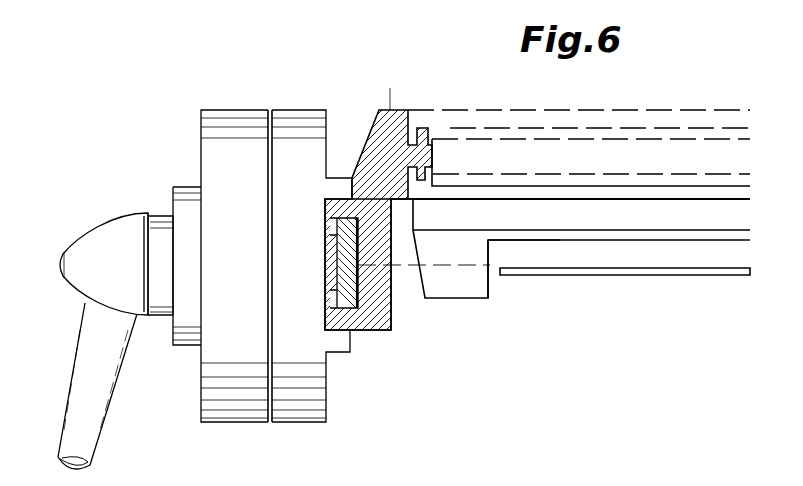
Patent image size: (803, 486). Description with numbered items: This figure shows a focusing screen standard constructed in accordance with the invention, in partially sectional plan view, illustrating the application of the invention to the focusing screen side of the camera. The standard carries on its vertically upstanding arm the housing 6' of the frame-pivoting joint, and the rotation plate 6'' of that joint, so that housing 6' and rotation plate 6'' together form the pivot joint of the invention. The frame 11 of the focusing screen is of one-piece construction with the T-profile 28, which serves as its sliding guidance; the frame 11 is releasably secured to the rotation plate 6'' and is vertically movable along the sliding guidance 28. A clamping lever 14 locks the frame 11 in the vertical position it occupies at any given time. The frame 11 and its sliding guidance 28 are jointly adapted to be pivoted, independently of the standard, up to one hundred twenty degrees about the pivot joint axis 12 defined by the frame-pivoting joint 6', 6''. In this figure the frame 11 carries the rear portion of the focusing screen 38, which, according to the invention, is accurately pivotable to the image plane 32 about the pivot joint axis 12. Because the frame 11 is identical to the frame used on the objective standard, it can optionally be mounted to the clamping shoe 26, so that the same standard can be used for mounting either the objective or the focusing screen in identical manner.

The clamping lever 14 is at (113, 242).
The housing of the frame-pivoting joint 6' is at (234, 296).
The rotation plate of the frame-pivoting joint 6'' is at (312, 296).
The frame 11 is at (407, 110).
The clamping shoe 26 is at (345, 233).
The T-profile (sliding guidance) 28 is at (356, 330).
The pivot joint axis 12 is at (448, 267).
The focusing screen 38 is at (465, 247).
The image plane 32 is at (640, 273).